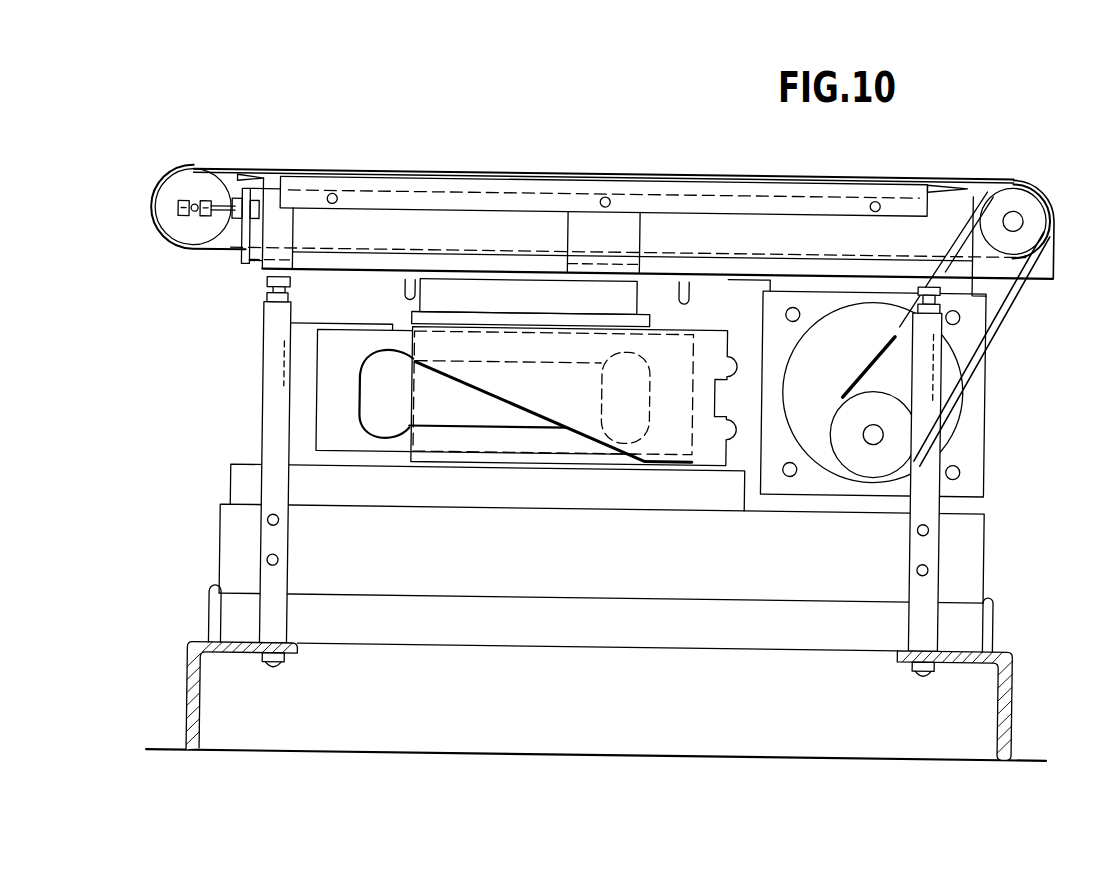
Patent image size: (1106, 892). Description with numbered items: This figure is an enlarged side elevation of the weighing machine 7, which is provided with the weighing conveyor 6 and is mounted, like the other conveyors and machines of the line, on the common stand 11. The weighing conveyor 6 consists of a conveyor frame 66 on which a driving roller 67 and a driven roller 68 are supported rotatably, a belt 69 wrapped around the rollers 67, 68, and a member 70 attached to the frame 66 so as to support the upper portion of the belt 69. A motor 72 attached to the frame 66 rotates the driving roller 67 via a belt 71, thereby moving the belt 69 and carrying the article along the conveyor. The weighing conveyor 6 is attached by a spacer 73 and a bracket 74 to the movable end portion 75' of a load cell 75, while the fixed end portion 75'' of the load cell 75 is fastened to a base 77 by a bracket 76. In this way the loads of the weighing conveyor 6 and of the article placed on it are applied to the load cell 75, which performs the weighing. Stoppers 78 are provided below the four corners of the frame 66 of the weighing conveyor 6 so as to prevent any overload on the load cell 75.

The weighing conveyor 6 is at (249, 168).
The weighing machine 7 is at (1009, 155).
The common stand 11 is at (582, 738).
The conveyor frame 66 is at (368, 273).
The driving roller 67 is at (996, 183).
The driven roller 68 is at (172, 236).
The belt 69 is at (298, 176).
The member 70 is at (358, 183).
The belt 71 is at (966, 360).
The motor 72 is at (956, 403).
The spacer 73 is at (453, 299).
The bracket 74 is at (683, 331).
The load cell 75 is at (526, 456).
The movable end portion 75' is at (635, 457).
The fixed end portion 75'' is at (462, 442).
The bracket 76 is at (299, 366).
The base 77 is at (242, 488).
The stoppers 78 is at (260, 286).